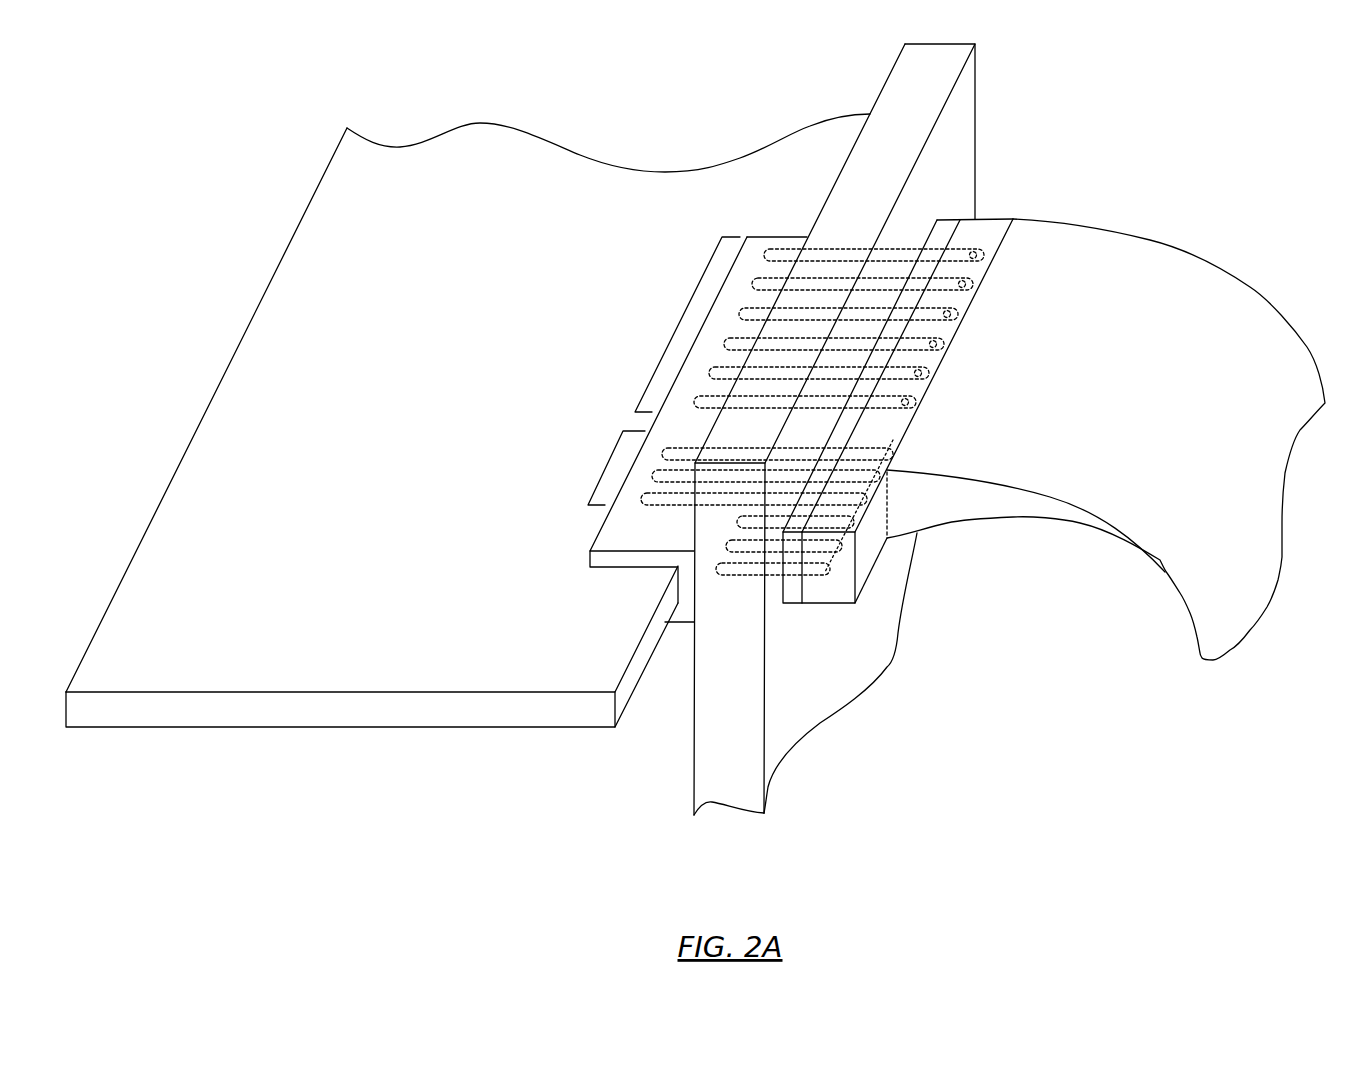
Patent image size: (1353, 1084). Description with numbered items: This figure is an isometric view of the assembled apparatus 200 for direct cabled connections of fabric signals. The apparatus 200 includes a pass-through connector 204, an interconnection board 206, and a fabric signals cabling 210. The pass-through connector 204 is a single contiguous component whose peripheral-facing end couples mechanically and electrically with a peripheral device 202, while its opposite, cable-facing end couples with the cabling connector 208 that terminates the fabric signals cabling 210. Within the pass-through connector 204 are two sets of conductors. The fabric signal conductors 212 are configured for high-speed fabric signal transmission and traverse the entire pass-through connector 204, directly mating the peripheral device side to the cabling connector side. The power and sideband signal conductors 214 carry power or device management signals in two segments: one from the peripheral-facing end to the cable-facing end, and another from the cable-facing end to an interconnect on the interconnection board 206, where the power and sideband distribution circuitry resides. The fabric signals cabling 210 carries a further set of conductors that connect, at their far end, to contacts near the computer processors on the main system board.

The apparatus 200 is at (702, 429).
The peripheral device 202 is at (330, 340).
The pass-through connector 204 is at (792, 587).
The interconnection board 206 is at (922, 70).
The cabling connector 208 is at (892, 423).
The fabric signals cabling 210 is at (1044, 516).
The fabric signal conductors 212 is at (680, 323).
The power and sideband signal conductors 214 is at (607, 465).